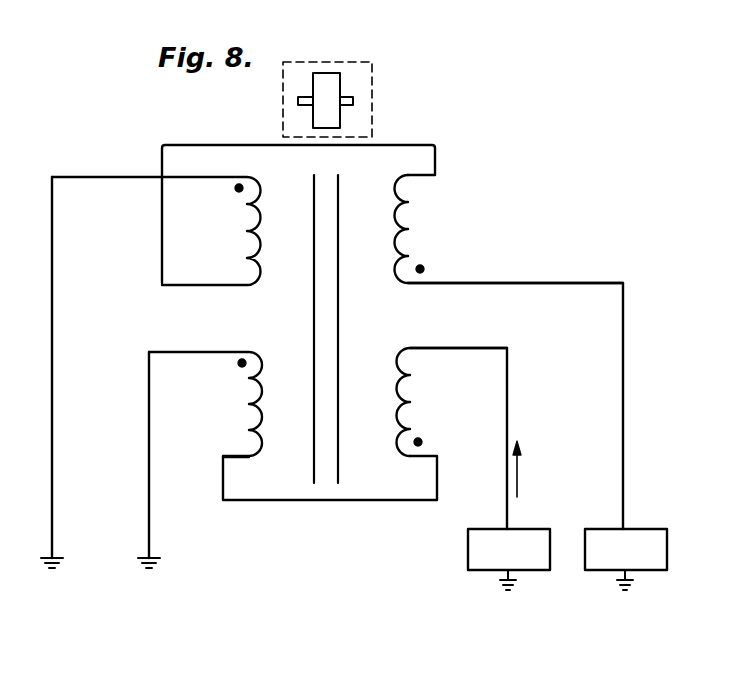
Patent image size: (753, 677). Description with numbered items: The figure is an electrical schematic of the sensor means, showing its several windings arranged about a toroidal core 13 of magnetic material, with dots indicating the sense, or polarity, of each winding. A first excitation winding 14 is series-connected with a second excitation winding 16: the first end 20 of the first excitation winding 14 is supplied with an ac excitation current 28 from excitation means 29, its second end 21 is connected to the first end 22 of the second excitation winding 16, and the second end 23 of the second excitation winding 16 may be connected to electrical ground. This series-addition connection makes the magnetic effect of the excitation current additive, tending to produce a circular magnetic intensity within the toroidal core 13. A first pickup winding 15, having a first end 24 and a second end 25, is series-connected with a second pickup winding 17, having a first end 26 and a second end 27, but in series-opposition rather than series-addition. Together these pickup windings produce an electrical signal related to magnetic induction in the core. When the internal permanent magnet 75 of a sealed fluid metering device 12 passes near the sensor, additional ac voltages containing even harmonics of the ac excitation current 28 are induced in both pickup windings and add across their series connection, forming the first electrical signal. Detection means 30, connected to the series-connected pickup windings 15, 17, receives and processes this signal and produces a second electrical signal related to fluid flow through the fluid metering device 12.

The fluid metering device 12 is at (372, 63).
The permanent magnet 75 is at (341, 90).
The toroidal core 13 is at (315, 228).
The first excitation winding 14 is at (412, 403).
The first pickup winding 15 is at (408, 229).
The second excitation winding 16 is at (243, 409).
The second pickup winding 17 is at (243, 236).
The first end of first excitation winding 20 is at (447, 349).
The second end of first excitation winding 21 is at (433, 456).
The first end of second excitation winding 22 is at (227, 456).
The second end of second excitation winding 23 is at (197, 352).
The first end of first pickup winding 24 is at (493, 283).
The second end of first pickup winding 25 is at (427, 176).
The first end of second pickup winding 26 is at (174, 283).
The second end of second pickup winding 27 is at (196, 177).
The ac excitation current 28 is at (530, 470).
The excitation means 29 is at (509, 559).
The detection means 30 is at (626, 559).